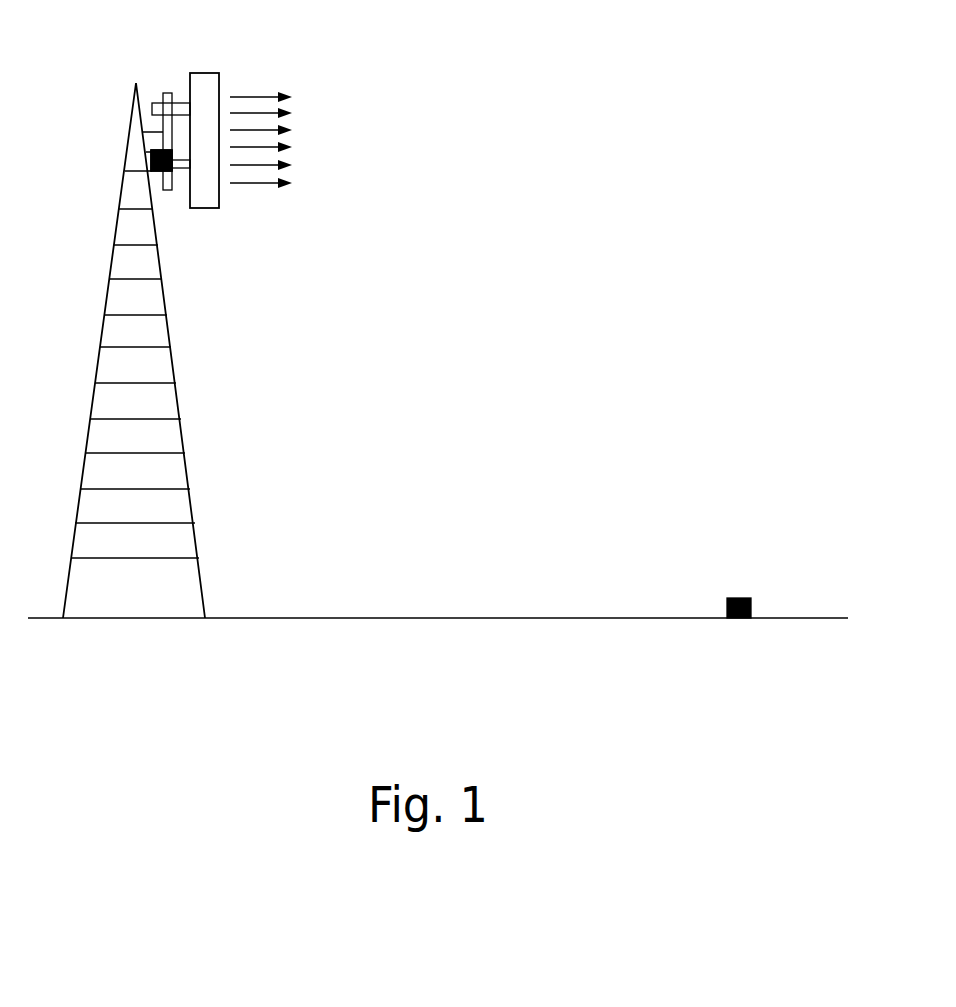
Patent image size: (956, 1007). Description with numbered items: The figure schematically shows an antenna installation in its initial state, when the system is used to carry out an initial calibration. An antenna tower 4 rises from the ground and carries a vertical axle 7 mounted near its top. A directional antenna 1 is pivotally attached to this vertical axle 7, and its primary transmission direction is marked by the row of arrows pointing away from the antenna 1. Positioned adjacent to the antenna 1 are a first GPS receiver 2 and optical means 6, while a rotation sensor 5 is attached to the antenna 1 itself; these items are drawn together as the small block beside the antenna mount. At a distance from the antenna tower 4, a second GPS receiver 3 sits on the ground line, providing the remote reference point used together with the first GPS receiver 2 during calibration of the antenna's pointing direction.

The directional antenna 1 is at (220, 190).
The first GPS receiver 2 is at (160, 176).
The second GPS receiver 3 is at (742, 597).
The antenna tower 4 is at (182, 435).
The rotation sensor 5 is at (161, 160).
The optical means 6 is at (161, 160).
The vertical axle 7 is at (168, 93).